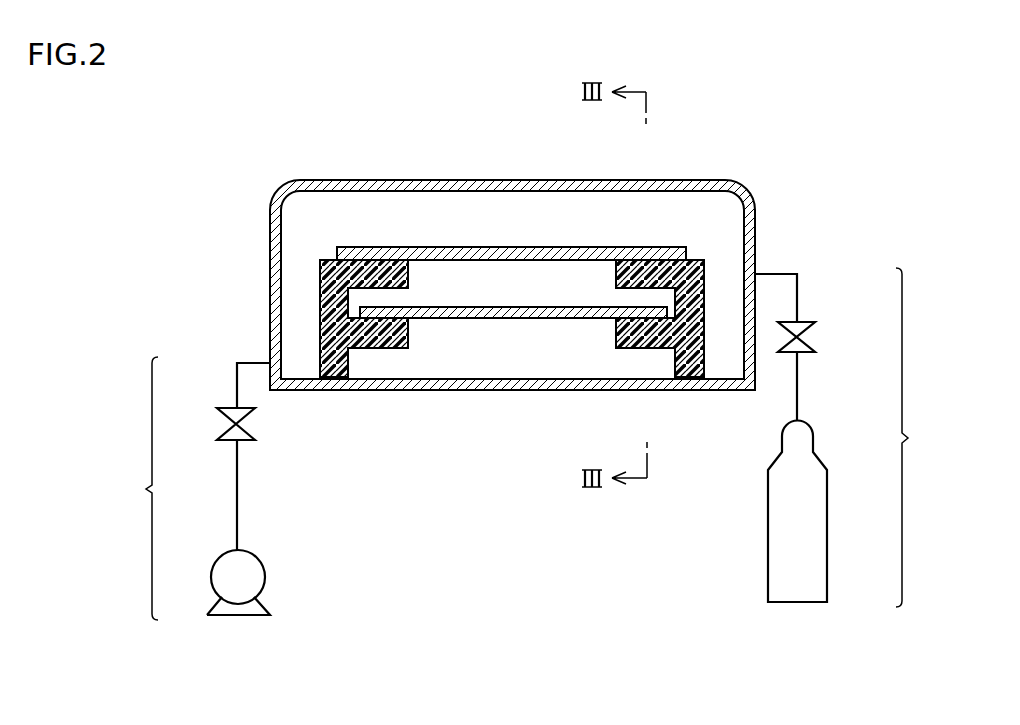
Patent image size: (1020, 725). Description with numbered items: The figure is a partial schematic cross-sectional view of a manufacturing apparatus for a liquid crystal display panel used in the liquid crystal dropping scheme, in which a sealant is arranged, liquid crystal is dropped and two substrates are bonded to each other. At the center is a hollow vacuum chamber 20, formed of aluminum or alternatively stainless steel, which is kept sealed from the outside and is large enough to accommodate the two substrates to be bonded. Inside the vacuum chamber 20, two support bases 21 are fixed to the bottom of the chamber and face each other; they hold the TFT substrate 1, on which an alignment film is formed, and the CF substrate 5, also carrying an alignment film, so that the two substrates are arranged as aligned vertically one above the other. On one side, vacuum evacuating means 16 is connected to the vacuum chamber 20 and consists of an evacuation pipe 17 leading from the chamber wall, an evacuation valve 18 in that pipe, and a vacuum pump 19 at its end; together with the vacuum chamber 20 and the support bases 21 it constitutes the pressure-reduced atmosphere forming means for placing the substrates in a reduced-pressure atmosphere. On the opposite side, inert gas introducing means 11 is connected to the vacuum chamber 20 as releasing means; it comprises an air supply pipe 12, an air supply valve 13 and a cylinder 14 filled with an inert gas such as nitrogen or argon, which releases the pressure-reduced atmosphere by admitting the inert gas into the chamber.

The TFT substrate 1 is at (477, 253).
The CF substrate 5 is at (495, 314).
The inert gas introducing means 11 is at (849, 437).
The air supply pipe 12 is at (797, 298).
The air supply valve 13 is at (805, 331).
The cylinder 14 is at (828, 513).
The vacuum evacuating means 16 is at (193, 488).
The evacuation pipe 17 is at (237, 387).
The evacuation valve 18 is at (228, 419).
The vacuum pump 19 is at (228, 556).
The vacuum chamber 20 is at (594, 381).
The support base 21 is at (333, 279).